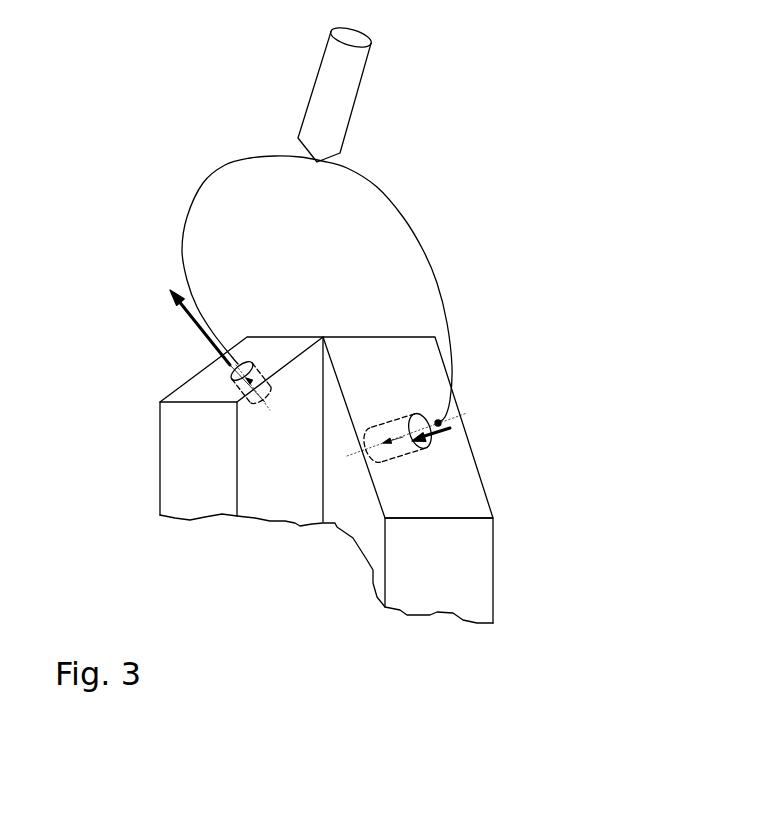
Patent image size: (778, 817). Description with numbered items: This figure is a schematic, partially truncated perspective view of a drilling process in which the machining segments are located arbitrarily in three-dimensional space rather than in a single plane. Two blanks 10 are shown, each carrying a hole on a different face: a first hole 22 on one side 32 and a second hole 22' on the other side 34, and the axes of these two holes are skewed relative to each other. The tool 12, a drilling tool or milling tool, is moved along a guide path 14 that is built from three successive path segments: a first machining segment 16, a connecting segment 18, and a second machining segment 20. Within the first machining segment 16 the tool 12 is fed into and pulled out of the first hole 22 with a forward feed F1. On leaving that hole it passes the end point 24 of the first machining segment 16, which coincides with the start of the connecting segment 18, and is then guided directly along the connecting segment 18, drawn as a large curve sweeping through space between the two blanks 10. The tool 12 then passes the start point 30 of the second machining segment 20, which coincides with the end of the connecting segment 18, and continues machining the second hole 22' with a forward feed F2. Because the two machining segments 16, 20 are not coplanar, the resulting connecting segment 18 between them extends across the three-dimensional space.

The blank 10 is at (175, 493).
The tool 12 is at (335, 107).
The guide path 14 is at (253, 243).
The first machining segment 16 is at (257, 405).
The connecting segment 18 is at (197, 193).
The second machining segment 20 is at (403, 438).
The first hole 22 is at (165, 404).
The second hole 22' is at (392, 535).
The end point of the first machining segment 24 is at (236, 364).
The start point of the second machining segment 30 is at (440, 422).
The side of the blank 32 is at (263, 360).
The other side of the blank 34 is at (365, 360).
The forward feed F1 is at (209, 346).
The forward feed F2 is at (436, 443).